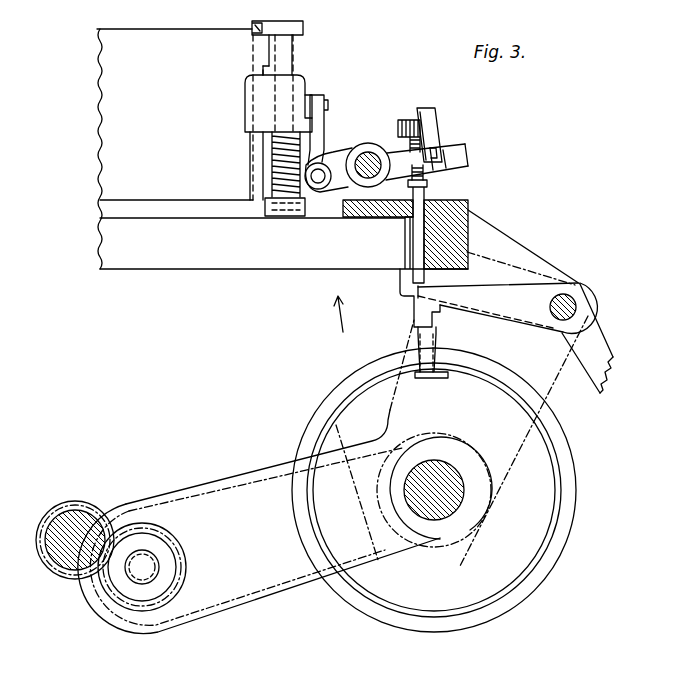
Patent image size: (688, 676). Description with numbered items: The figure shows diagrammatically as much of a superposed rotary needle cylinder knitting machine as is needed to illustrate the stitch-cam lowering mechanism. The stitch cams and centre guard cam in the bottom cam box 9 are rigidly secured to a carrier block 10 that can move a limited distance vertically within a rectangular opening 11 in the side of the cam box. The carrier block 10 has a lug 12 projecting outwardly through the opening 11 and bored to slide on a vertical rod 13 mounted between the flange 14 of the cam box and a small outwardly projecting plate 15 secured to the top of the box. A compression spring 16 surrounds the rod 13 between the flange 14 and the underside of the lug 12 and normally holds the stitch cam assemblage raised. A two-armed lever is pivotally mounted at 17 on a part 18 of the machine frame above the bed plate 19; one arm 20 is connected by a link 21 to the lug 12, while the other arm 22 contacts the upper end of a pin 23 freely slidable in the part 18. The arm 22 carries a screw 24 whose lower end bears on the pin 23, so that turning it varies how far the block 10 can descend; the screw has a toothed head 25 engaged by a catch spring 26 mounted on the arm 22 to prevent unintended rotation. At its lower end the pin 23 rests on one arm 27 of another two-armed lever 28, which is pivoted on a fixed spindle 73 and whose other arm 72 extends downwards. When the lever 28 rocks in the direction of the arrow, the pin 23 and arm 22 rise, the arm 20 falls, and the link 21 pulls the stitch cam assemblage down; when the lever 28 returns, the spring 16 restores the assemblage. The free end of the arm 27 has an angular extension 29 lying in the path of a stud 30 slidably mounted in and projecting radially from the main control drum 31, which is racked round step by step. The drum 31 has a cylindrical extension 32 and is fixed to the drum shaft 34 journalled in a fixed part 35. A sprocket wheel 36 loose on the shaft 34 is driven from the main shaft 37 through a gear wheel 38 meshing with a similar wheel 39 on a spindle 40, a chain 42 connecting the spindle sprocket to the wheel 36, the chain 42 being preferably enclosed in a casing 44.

The bottom cam box 9 is at (133, 45).
The carrier block 10 is at (258, 100).
The rectangular opening 11 is at (250, 70).
The lug 12 is at (300, 82).
The rod 13 is at (292, 52).
The flange 14 is at (120, 208).
The plate 15 is at (268, 30).
The compression spring 16 is at (278, 163).
The pivot 17 is at (370, 160).
The frame part 18 is at (432, 196).
The bed plate 19 is at (266, 254).
The lever arm 20 is at (347, 184).
The link 21 is at (316, 139).
The lever arm 22 is at (455, 153).
The pin 23 is at (455, 218).
The screw 24 is at (430, 172).
The toothed head 25 is at (406, 122).
The catch spring 26 is at (433, 112).
The lever arm 27 is at (541, 307).
The two-armed lever 28 is at (600, 313).
The angular extension 29 is at (416, 316).
The stud 30 is at (426, 344).
The main control drum 31 is at (530, 512).
The extension 32 is at (560, 421).
The drum shaft 34 is at (433, 490).
The fixed part 35 is at (522, 454).
The sprocket wheel 36 is at (468, 522).
The main shaft 37 is at (74, 540).
The gear wheel 38 is at (58, 504).
The gear wheel 39 is at (200, 548).
The spindle 40 is at (142, 562).
The chain 42 is at (270, 598).
The casing 44 is at (243, 472).
The lever arm 72 is at (613, 364).
The fixed spindle 73 is at (568, 300).